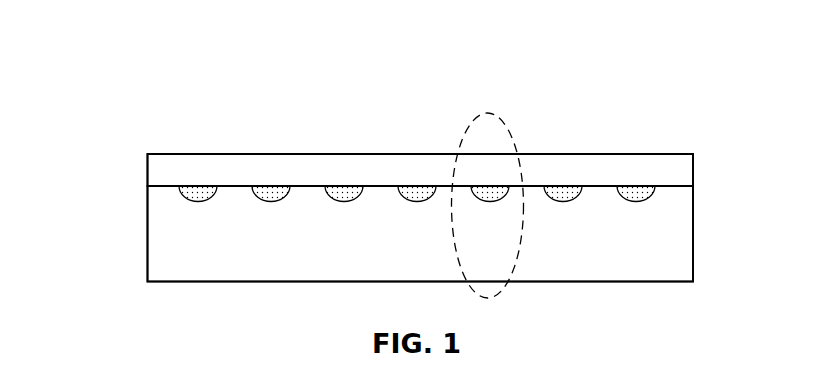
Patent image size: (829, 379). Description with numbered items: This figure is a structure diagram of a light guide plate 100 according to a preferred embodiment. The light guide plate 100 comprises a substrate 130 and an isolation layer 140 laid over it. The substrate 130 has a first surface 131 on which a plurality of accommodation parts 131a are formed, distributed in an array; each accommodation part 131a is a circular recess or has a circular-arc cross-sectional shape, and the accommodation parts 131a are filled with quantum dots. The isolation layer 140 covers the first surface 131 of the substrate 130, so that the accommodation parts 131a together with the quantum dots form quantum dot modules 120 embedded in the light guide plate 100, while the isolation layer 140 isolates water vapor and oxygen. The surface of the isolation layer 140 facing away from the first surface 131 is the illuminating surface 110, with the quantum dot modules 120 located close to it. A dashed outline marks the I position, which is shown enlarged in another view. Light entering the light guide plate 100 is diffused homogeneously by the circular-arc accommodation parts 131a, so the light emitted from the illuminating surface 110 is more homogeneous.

The light guide plate 100 is at (420, 36).
The illuminating surface 110 is at (662, 151).
The quantum dot module 120 is at (643, 197).
The substrate 130 is at (648, 247).
The first surface 131 is at (674, 185).
The accommodation part 131a is at (182, 197).
The isolation layer 140 is at (172, 163).
The I position I is at (507, 128).